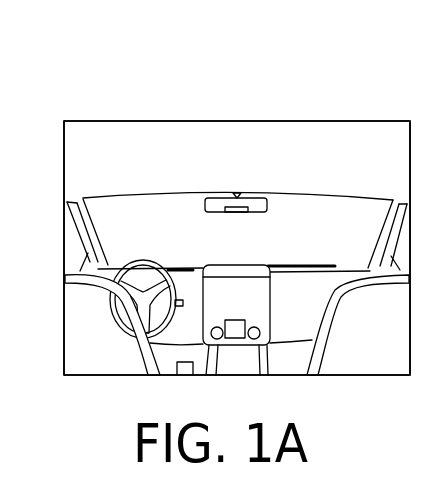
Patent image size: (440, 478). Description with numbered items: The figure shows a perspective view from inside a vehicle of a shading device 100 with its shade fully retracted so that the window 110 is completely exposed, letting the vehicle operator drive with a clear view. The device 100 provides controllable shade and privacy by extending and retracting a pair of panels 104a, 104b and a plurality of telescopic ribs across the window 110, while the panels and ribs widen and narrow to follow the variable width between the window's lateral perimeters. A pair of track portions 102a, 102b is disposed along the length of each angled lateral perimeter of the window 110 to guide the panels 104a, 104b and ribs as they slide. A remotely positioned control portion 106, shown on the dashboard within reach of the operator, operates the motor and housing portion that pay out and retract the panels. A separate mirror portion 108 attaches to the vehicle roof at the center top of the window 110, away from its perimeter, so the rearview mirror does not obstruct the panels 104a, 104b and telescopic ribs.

The shading device 100 is at (185, 87).
The track portion 102a is at (88, 215).
The track portion 102b is at (382, 217).
The panel 104a is at (303, 163).
The panel 104b is at (434, 150).
The control portion 106 is at (233, 347).
The mirror portion 108 is at (205, 210).
The window 110 is at (261, 246).